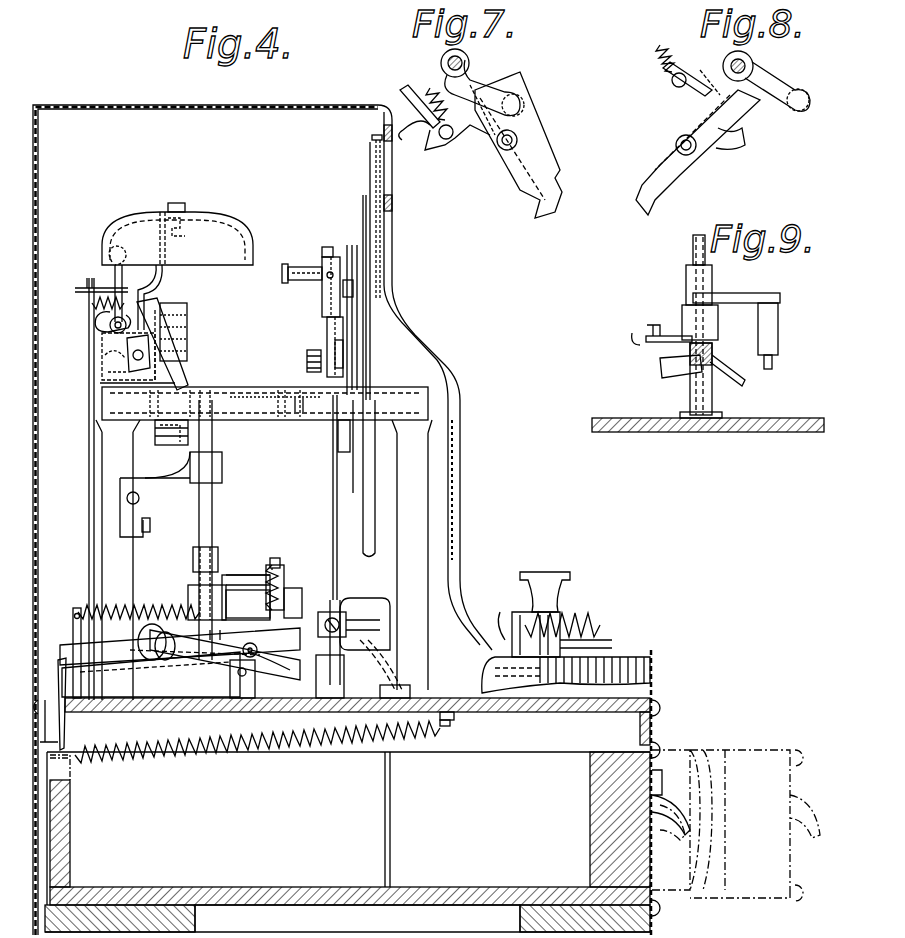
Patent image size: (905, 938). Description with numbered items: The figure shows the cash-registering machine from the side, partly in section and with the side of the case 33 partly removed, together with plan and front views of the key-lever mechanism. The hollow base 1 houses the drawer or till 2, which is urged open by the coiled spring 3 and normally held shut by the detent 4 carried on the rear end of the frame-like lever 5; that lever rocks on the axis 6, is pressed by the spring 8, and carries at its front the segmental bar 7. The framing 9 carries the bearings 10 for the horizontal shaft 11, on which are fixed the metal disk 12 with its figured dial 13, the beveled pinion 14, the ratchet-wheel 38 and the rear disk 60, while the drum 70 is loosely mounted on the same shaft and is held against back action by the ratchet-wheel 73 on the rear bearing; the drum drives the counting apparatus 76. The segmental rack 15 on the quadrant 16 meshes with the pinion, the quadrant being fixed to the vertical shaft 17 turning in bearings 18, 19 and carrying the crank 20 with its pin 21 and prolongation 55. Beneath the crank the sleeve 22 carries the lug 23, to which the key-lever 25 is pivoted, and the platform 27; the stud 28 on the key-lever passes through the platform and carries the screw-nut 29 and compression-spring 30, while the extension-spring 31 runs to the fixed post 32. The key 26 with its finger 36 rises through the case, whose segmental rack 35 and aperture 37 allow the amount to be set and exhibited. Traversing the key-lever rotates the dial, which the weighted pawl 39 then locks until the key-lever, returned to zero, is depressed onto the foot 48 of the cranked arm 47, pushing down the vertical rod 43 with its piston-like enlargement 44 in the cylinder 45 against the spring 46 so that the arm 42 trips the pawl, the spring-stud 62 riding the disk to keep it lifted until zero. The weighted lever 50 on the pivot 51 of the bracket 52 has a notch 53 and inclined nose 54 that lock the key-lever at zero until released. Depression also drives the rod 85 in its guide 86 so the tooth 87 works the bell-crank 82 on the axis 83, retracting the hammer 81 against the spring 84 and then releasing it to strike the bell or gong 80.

In FIG. 4, the base 1 is at (540, 712).
In FIG. 9, the base 1 is at (594, 416).
In FIG. 4, the drawer or till 2 is at (347, 842).
In FIG. 4, the coiled spring 3 is at (133, 755).
In FIG. 4, the detent 4 is at (58, 723).
In FIG. 4, the frame-like lever 5 is at (149, 668).
In FIG. 4, the axis 6 is at (218, 712).
In FIG. 4, the curved or segmental bar 7 is at (398, 672).
In FIG. 4, the spring 8 is at (55, 703).
In FIG. 4, the framing 9 is at (264, 560).
In FIG. 4, the bearings 10 is at (100, 368).
In FIG. 4, the horizontal shaft 11 is at (232, 378).
In FIG. 4, the metal disk 12 is at (364, 198).
In FIG. 4, the dial 13 is at (368, 148).
In FIG. 4, the beveled pinion 14 is at (305, 358).
In FIG. 4, the segmental rack 15 is at (300, 412).
In FIG. 4, the quadrant 16 is at (240, 428).
In FIG. 4, the vertical shaft 17 is at (214, 505).
In FIG. 7, the vertical shaft 17 is at (465, 68).
In FIG. 8, the vertical shaft 17 is at (745, 58).
In FIG. 9, the vertical shaft 17 is at (690, 252).
In FIG. 4, the bearing 18 is at (222, 470).
In FIG. 4, the bearing 19 is at (185, 712).
In FIG. 9, the bearing 19 is at (710, 420).
In FIG. 4, the crank 20 is at (248, 578).
In FIG. 7, the crank 20 is at (512, 100).
In FIG. 8, the crank 20 is at (775, 100).
In FIG. 9, the crank 20 is at (740, 292).
In FIG. 4, the pin 21 is at (268, 600).
In FIG. 7, the pin 21 is at (525, 110).
In FIG. 8, the pin 21 is at (806, 110).
In FIG. 9, the pin 21 is at (775, 325).
In FIG. 4, the sleeve 22 is at (190, 600).
In FIG. 7, the sleeve 22 is at (441, 62).
In FIG. 8, the sleeve 22 is at (724, 58).
In FIG. 9, the sleeve 22 is at (682, 320).
In FIG. 4, the lug or offset 23 is at (232, 632).
In FIG. 4, the key-lever 25 is at (312, 625).
In FIG. 7, the key-lever 25 is at (557, 185).
In FIG. 8, the key-lever 25 is at (632, 196).
In FIG. 9, the key-lever 25 is at (712, 358).
In FIG. 4, the button head or key 26 is at (545, 572).
In FIG. 4, the table or platform 27 is at (314, 641).
In FIG. 7, the table or platform 27 is at (528, 150).
In FIG. 8, the table or platform 27 is at (688, 172).
In FIG. 9, the table or platform 27 is at (712, 340).
In FIG. 4, the pin or stud 28 is at (276, 562).
In FIG. 7, the pin or stud 28 is at (500, 152).
In FIG. 8, the pin or stud 28 is at (674, 142).
In FIG. 4, the screw-nut 29 is at (290, 612).
In FIG. 7, the screw-nut 29 is at (492, 145).
In FIG. 8, the screw-nut 29 is at (680, 152).
In FIG. 4, the compression-spring 30 is at (286, 585).
In FIG. 4, the coiled extension-spring 31 is at (110, 605).
In FIG. 7, the coiled extension-spring 31 is at (428, 88).
In FIG. 8, the coiled extension-spring 31 is at (662, 50).
In FIG. 9, the coiled extension-spring 31 is at (632, 337).
In FIG. 4, the fixed post 32 is at (72, 630).
In FIG. 4, the case 33 is at (123, 114).
In FIG. 4, the segmental rack 35 is at (610, 642).
In FIG. 4, the finger 36 is at (545, 612).
In FIG. 4, the aperture 37 is at (386, 192).
In FIG. 4, the ratchet-wheel 38 is at (335, 462).
In FIG. 4, the weighted pawl 39 is at (333, 250).
In FIG. 4, the arm 42 is at (328, 278).
In FIG. 4, the vertical rod 43 is at (332, 498).
In FIG. 4, the piston-like enlargement 44 is at (325, 308).
In FIG. 4, the cylinder 45 is at (325, 340).
In FIG. 4, the spring 46 is at (343, 362).
In FIG. 4, the cranked arm 47 is at (431, 733).
In FIG. 4, the foot or platform 48 is at (455, 716).
In FIG. 4, the weighted lever 50 is at (140, 652).
In FIG. 7, the weighted lever 50 is at (398, 92).
In FIG. 8, the weighted lever 50 is at (670, 82).
In FIG. 9, the weighted lever 50 is at (660, 362).
In FIG. 4, the pivot 51 is at (297, 603).
In FIG. 4, the bracket 52 is at (195, 660).
In FIG. 7, the notch 53 is at (412, 140).
In FIG. 9, the notch 53 is at (700, 375).
In FIG. 4, the inclined nose 54 is at (258, 712).
In FIG. 7, the inclined nose 54 is at (440, 146).
In FIG. 8, the inclined nose 54 is at (745, 148).
In FIG. 9, the inclined nose 54 is at (745, 384).
In FIG. 4, the prolongation 55 is at (292, 665).
In FIG. 9, the prolongation 55 is at (772, 366).
In FIG. 4, the disk 60 is at (352, 248).
In FIG. 4, the spring-stud 62 is at (276, 268).
In FIG. 4, the drum 70 is at (190, 330).
In FIG. 4, the ratchet-wheel 73 is at (155, 432).
In FIG. 4, the counting apparatus 76 is at (160, 308).
In FIG. 4, the bell or gong 80 is at (177, 234).
In FIG. 4, the hammer 81 is at (108, 268).
In FIG. 4, the bell-crank 82 is at (160, 297).
In FIG. 4, the axis of motion 83 is at (100, 335).
In FIG. 4, the spring 84 is at (90, 301).
In FIG. 4, the rod 85 is at (87, 402).
In FIG. 4, the guide 86 is at (82, 290).
In FIG. 4, the tooth or projection 87 is at (98, 325).